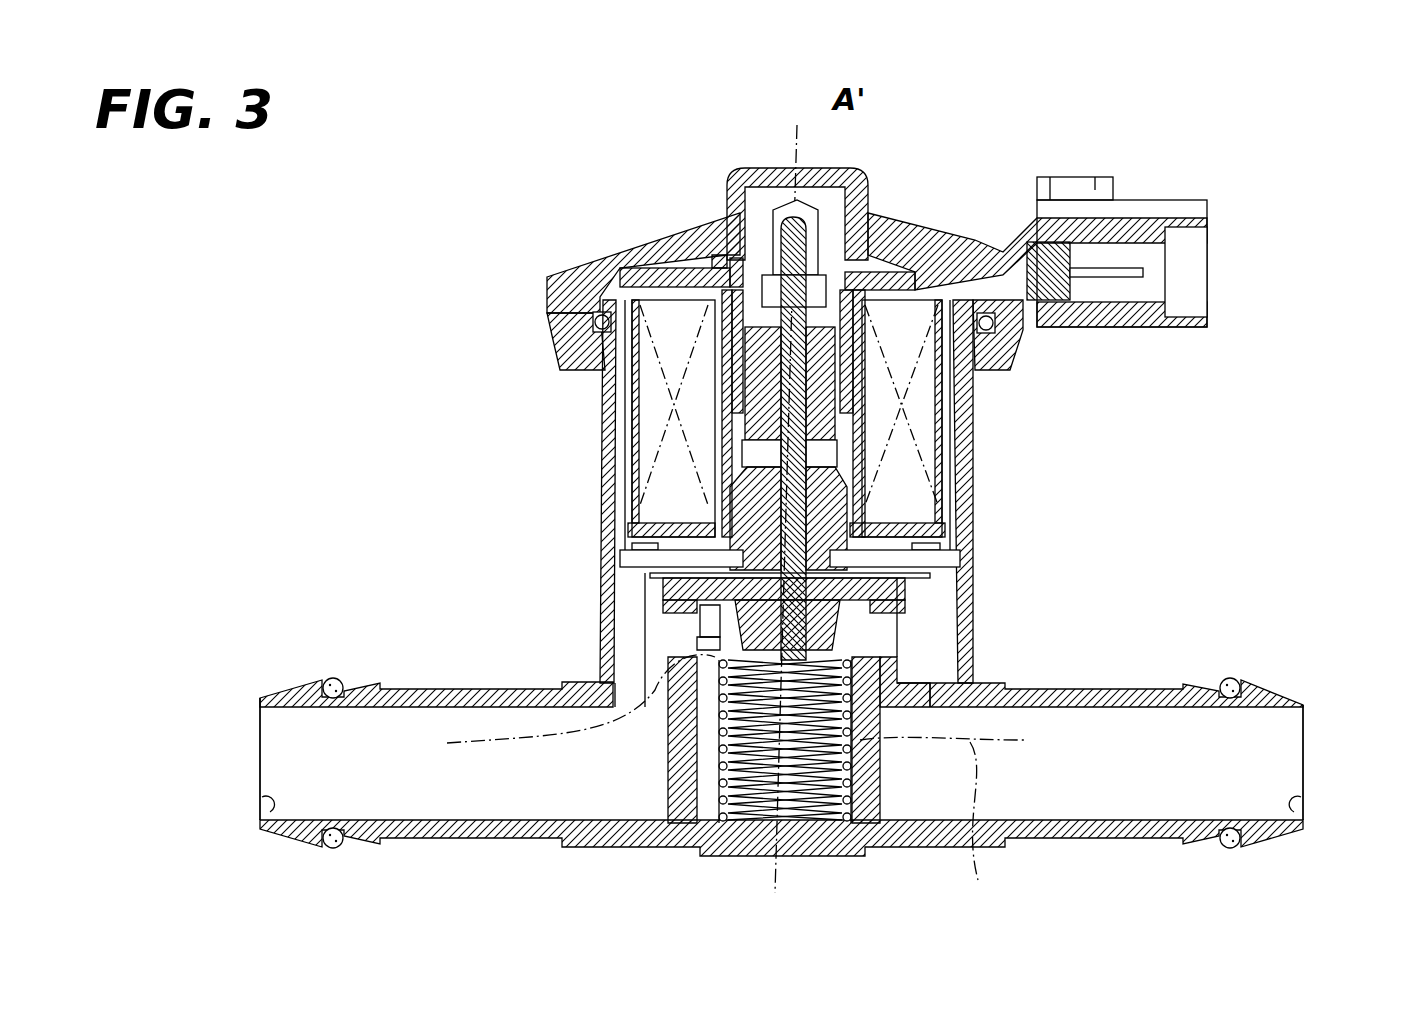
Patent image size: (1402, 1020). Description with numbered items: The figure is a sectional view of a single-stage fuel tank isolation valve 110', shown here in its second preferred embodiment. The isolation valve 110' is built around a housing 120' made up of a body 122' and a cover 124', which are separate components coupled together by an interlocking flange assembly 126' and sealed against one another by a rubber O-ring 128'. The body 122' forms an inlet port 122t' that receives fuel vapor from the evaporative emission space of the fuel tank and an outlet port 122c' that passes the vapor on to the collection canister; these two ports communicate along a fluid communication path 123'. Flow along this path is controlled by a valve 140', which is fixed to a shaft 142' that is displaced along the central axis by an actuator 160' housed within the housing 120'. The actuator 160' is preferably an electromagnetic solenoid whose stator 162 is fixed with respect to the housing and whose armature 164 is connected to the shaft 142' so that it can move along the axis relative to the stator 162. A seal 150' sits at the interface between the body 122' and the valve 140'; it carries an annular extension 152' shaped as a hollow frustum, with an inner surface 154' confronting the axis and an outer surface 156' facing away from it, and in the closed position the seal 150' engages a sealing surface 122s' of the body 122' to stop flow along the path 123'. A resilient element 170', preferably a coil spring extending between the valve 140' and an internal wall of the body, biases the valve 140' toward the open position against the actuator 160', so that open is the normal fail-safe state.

The fuel tank isolation valve 110' is at (780, 504).
The housing 120' is at (776, 524).
The body 122' is at (776, 617).
The outlet port 122c' is at (222, 788).
The inlet port 122t' is at (1335, 795).
The sealing surface 122s' is at (997, 681).
The fluid communication path 123' is at (982, 823).
The cover 124' is at (835, 397).
The interlocking flange assembly 126' is at (1057, 343).
The O-ring 128' is at (1076, 237).
The valve 140' is at (867, 557).
The shaft 142' is at (743, 209).
The seal 150' is at (852, 577).
The annular extension 152' is at (905, 626).
The inner surface 154' is at (592, 621).
The outer surface 156' is at (593, 582).
The actuator 160' is at (720, 491).
The stator 162 is at (828, 515).
The armature 164 is at (813, 381).
The resilient element 170' is at (781, 798).